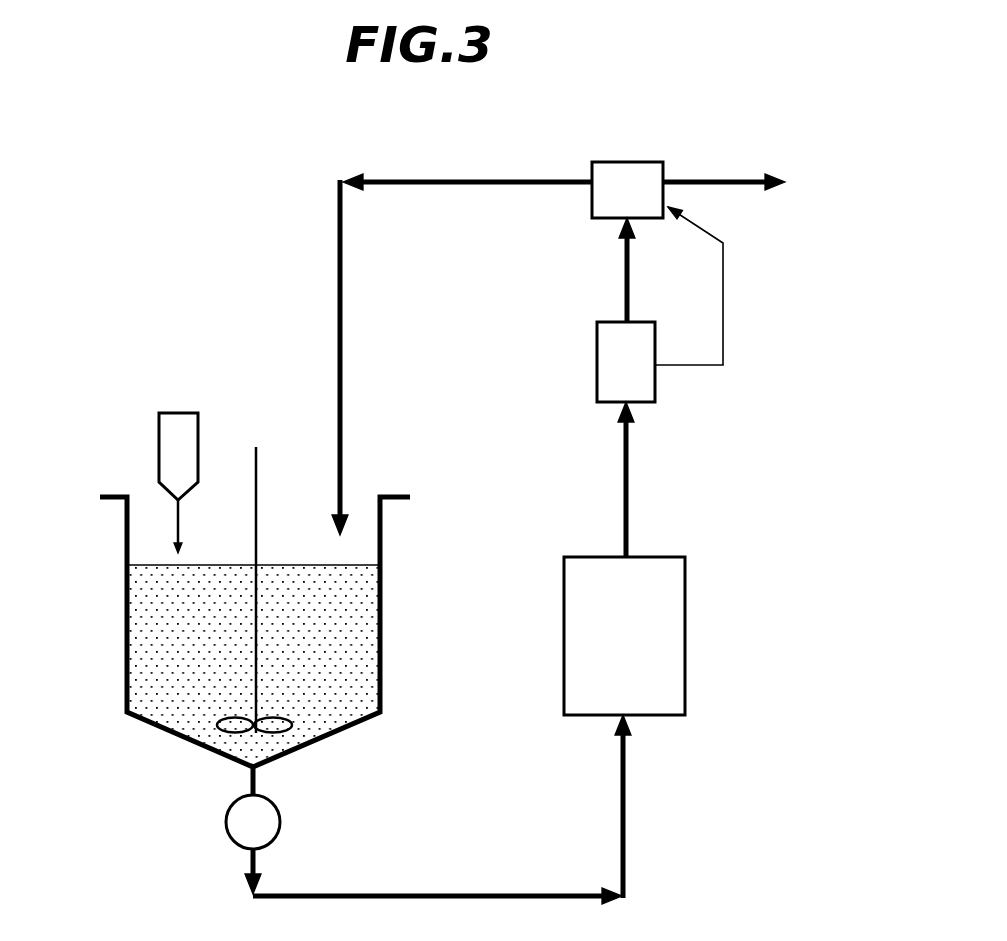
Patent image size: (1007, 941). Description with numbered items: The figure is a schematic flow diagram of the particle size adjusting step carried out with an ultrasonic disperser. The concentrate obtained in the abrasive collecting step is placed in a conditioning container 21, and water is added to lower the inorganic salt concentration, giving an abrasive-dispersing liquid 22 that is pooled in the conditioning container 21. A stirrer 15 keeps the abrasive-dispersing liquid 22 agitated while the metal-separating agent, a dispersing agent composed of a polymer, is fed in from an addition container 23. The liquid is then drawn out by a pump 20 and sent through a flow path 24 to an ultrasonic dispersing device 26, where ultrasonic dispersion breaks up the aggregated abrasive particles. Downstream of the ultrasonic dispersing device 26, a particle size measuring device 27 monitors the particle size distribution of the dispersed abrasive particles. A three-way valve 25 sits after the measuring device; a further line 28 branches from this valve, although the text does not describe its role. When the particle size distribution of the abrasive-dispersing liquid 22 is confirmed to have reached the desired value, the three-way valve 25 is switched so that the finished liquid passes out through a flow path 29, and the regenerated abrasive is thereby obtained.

The stirrer 15 is at (258, 480).
The pump 20 is at (283, 808).
The conditioning container 21 is at (165, 732).
The abrasive-dispersing liquid 22 is at (172, 598).
The addition container 23 is at (182, 433).
The flow path 24 is at (488, 178).
The three-way valve 25 is at (637, 180).
The ultrasonic dispersing device 26 is at (587, 632).
The particle size measuring device 27 is at (618, 362).
The control line 28 is at (725, 307).
The flow path 29 is at (712, 180).